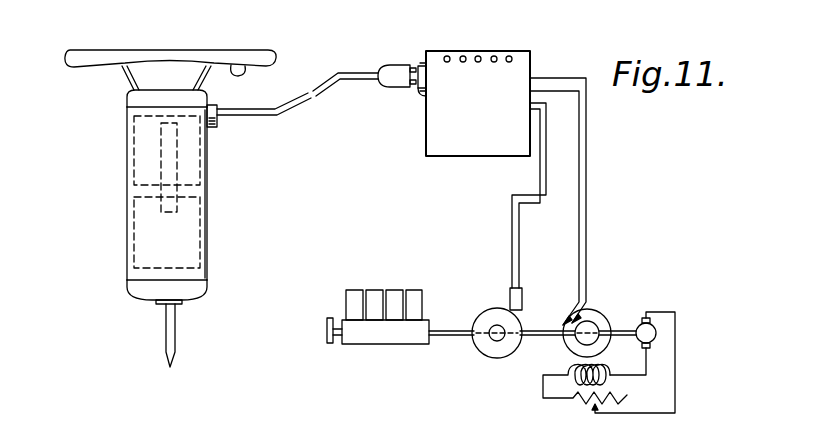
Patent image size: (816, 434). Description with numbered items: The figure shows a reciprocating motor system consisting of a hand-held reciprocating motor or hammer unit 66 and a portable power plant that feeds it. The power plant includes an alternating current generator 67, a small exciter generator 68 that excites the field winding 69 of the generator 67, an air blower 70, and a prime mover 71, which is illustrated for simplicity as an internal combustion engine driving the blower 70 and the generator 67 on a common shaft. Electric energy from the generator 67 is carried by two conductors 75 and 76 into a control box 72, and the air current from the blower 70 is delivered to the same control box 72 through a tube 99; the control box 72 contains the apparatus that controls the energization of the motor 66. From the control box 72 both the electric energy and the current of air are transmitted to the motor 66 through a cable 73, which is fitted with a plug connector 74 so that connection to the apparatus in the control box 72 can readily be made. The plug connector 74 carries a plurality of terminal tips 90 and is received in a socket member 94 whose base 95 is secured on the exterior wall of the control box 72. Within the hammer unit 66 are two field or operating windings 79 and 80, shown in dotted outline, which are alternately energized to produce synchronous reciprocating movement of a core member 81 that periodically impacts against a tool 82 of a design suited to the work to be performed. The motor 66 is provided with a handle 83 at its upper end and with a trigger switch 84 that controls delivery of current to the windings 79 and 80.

The reciprocating motor or hammer unit 66 is at (207, 212).
The alternating current generator 67 is at (598, 318).
The exciter generator 68 is at (650, 317).
The field winding 69 is at (568, 373).
The air blower 70 is at (486, 355).
The prime mover 71 is at (378, 290).
The control box 72 is at (478, 103).
The cable 73 is at (312, 97).
The plug connector 74 is at (390, 86).
The conductor 75 is at (587, 184).
The conductor 76 is at (578, 247).
The field or operating winding 79 is at (200, 246).
The field or operating winding 80 is at (128, 158).
The core member 81 is at (177, 164).
The tool 82 is at (164, 338).
The handle 83 is at (140, 51).
The trigger switch 84 is at (238, 74).
The terminal tips 90 is at (412, 68).
The socket member 94 is at (422, 64).
The base 95 is at (426, 96).
The tube 99 is at (511, 228).